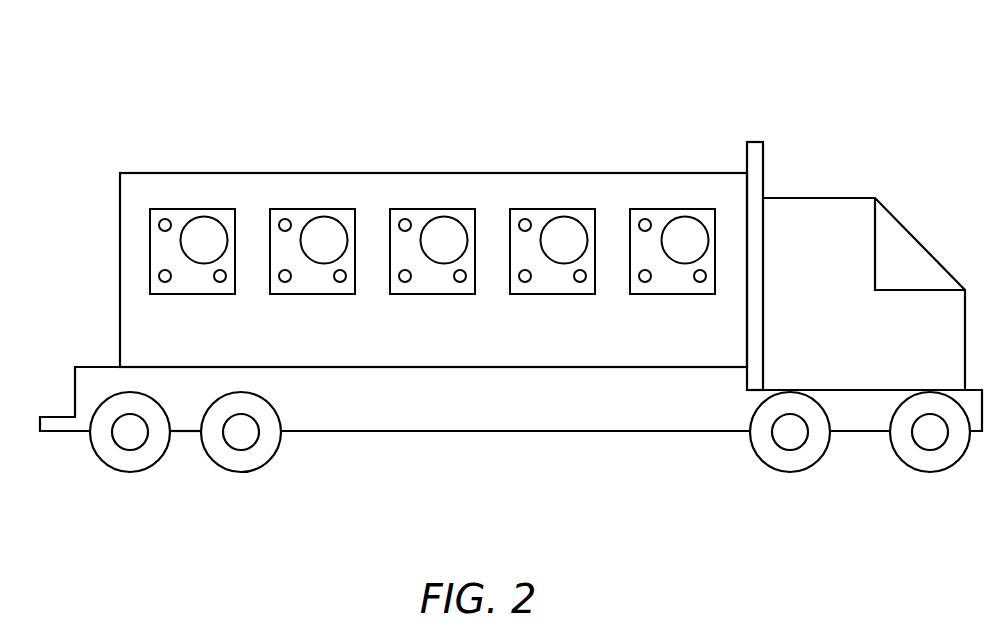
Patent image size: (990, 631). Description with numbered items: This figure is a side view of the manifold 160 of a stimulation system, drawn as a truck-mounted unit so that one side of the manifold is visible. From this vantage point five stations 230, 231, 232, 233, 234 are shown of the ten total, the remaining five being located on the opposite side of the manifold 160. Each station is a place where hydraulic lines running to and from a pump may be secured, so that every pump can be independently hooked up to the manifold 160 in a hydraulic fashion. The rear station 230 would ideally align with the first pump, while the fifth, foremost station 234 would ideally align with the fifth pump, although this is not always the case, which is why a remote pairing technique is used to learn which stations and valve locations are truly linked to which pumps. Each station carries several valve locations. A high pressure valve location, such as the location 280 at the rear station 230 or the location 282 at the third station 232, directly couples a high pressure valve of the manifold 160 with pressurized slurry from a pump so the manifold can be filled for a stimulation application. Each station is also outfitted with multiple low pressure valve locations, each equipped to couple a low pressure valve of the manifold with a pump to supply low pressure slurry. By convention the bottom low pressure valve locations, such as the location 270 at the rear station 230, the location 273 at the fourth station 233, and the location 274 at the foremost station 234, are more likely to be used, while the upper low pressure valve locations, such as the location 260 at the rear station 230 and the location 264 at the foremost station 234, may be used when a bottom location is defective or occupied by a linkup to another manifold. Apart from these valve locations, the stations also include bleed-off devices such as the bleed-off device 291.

The manifold 160 is at (826, 40).
The station 230 is at (147, 196).
The station 231 is at (300, 208).
The station 232 is at (436, 186).
The station 233 is at (527, 215).
The station 234 is at (679, 225).
The high pressure valve location 280 is at (200, 215).
The high pressure valve location 282 is at (448, 216).
The low pressure valve location 260 is at (158, 225).
The low pressure valve location 270 is at (158, 276).
The low pressure valve location 264 is at (647, 218).
The low pressure valve location 273 is at (520, 282).
The low pressure valve location 274 is at (647, 282).
The bleed-off device 291 is at (340, 282).